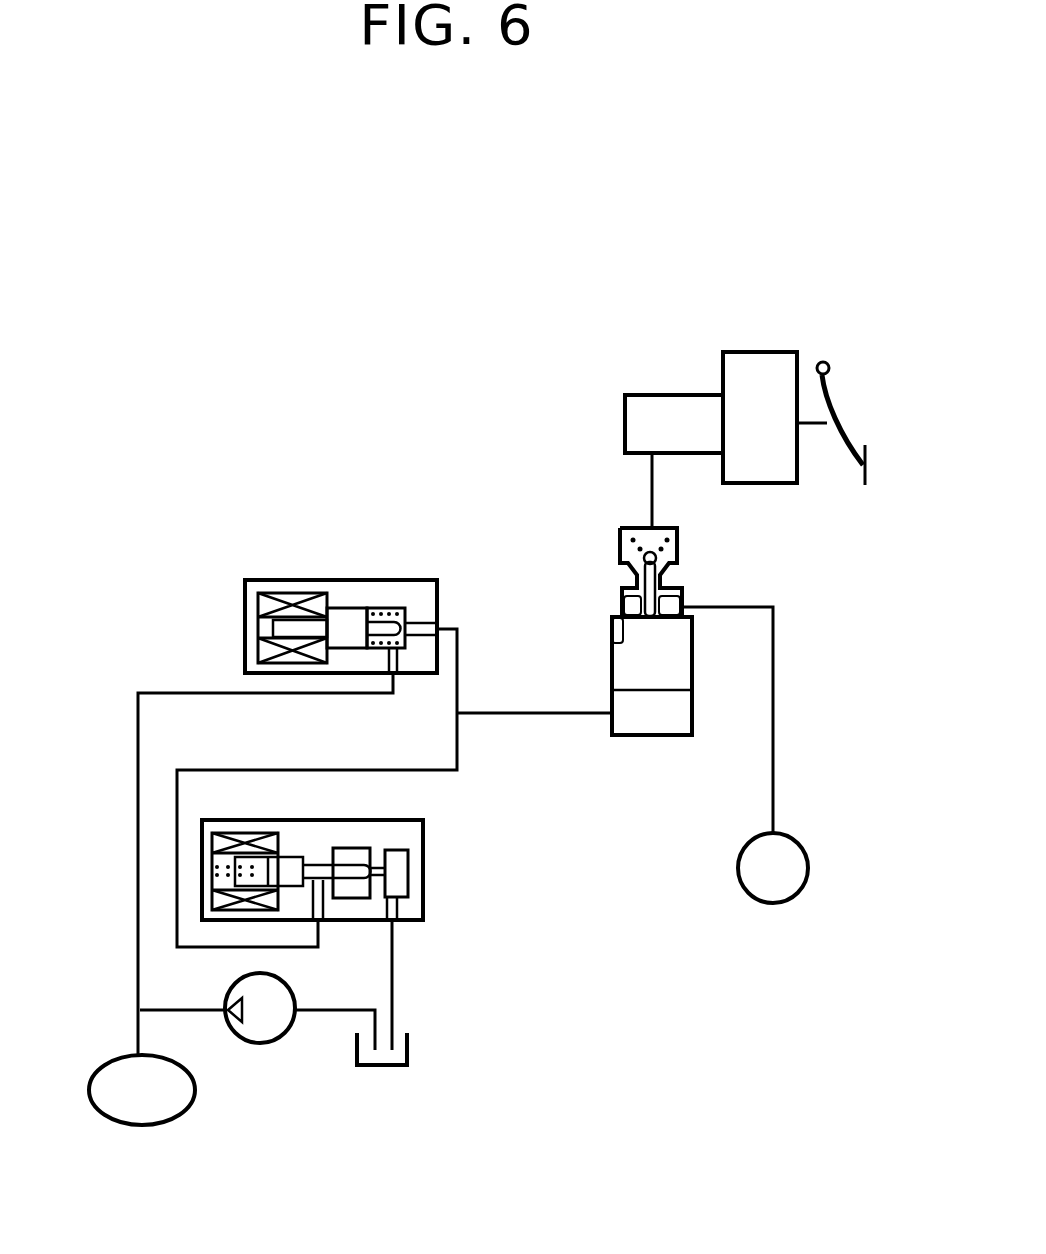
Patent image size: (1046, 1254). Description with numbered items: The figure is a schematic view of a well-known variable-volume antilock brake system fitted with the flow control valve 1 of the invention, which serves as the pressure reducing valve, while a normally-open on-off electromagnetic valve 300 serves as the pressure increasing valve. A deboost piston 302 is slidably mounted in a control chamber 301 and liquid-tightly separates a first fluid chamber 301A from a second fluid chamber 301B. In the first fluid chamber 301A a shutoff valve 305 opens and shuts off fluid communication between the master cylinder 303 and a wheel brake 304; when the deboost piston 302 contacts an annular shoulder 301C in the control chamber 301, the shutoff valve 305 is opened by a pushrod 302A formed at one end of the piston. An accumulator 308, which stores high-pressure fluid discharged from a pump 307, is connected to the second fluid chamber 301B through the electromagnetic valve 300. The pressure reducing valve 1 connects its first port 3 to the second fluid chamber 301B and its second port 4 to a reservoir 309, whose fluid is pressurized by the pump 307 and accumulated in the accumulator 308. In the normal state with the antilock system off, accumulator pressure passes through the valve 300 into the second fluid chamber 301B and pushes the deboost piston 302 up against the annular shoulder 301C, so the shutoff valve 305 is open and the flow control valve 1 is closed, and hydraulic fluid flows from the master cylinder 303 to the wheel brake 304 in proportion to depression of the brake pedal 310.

The flow control valve 1 is at (418, 865).
The first port 3 is at (320, 925).
The second port 4 is at (395, 925).
The normally-open on-off electromagnetic valve 300 is at (262, 587).
The control chamber 301 is at (605, 668).
The first fluid chamber 301A is at (632, 605).
The second fluid chamber 301B is at (650, 710).
The annular shoulder 301C is at (613, 643).
The deboost piston 302 is at (670, 660).
The pushrod 302A is at (682, 592).
The master cylinder 303 is at (660, 395).
The wheel brake 304 is at (763, 903).
The shutoff valve 305 is at (657, 558).
The pump 307 is at (273, 1043).
The accumulator 308 is at (103, 1063).
The reservoir 309 is at (407, 1050).
The brake pedal 310 is at (845, 435).